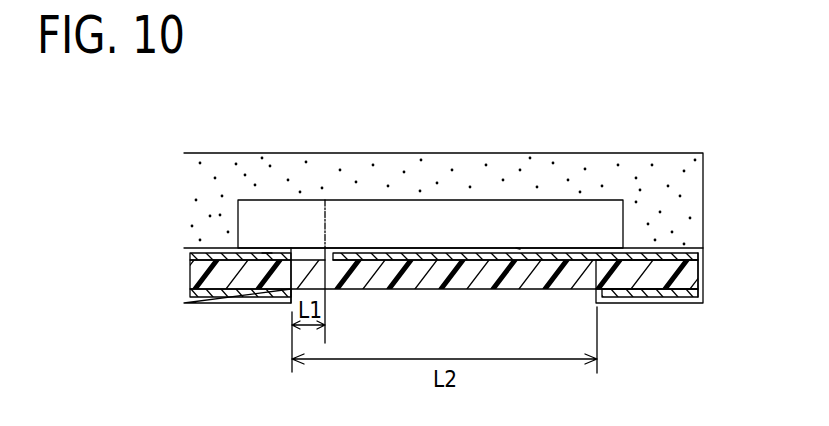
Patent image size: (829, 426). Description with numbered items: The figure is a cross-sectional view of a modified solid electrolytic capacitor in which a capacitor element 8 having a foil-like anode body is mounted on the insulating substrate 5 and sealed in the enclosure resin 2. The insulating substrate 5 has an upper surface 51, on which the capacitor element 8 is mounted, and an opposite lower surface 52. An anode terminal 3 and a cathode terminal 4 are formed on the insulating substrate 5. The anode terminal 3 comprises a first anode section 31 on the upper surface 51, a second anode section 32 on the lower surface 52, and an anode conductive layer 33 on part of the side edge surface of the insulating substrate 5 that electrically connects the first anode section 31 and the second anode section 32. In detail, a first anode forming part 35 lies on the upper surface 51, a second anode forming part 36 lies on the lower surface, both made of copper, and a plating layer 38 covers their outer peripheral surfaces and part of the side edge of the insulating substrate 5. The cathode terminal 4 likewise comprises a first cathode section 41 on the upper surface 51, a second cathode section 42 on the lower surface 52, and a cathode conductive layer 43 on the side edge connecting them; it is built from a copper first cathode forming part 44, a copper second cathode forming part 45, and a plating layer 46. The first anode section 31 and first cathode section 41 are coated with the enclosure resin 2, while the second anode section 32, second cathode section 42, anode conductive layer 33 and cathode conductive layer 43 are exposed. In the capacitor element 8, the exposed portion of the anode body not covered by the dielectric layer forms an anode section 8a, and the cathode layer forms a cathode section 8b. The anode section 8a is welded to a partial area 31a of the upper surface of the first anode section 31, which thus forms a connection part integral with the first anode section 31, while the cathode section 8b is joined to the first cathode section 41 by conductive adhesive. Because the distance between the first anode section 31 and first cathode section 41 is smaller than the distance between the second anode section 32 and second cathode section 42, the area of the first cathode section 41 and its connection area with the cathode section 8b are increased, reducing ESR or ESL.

The enclosure resin 2 is at (673, 163).
The anode terminal 3 is at (194, 234).
The cathode terminal 4 is at (565, 303).
The insulating substrate 5 is at (452, 290).
The capacitor element 8 is at (472, 200).
The anode section 8a is at (306, 222).
The cathode section 8b is at (516, 250).
The first anode section 31 is at (203, 247).
The partial area 31a is at (267, 247).
The second anode section 32 is at (200, 304).
The anode conductive layer 33 is at (189, 277).
The first anode forming part 35 is at (226, 258).
The second anode forming part 36 is at (245, 291).
The plating layer 38 is at (268, 297).
The first cathode section 41 is at (683, 248).
The second cathode section 42 is at (683, 305).
The cathode conductive layer 43 is at (704, 279).
The first cathode forming part 44 is at (617, 292).
The second cathode forming part 45 is at (633, 294).
The plating layer 46 is at (665, 298).
The upper surface 51 is at (319, 262).
The lower surface 52 is at (382, 290).